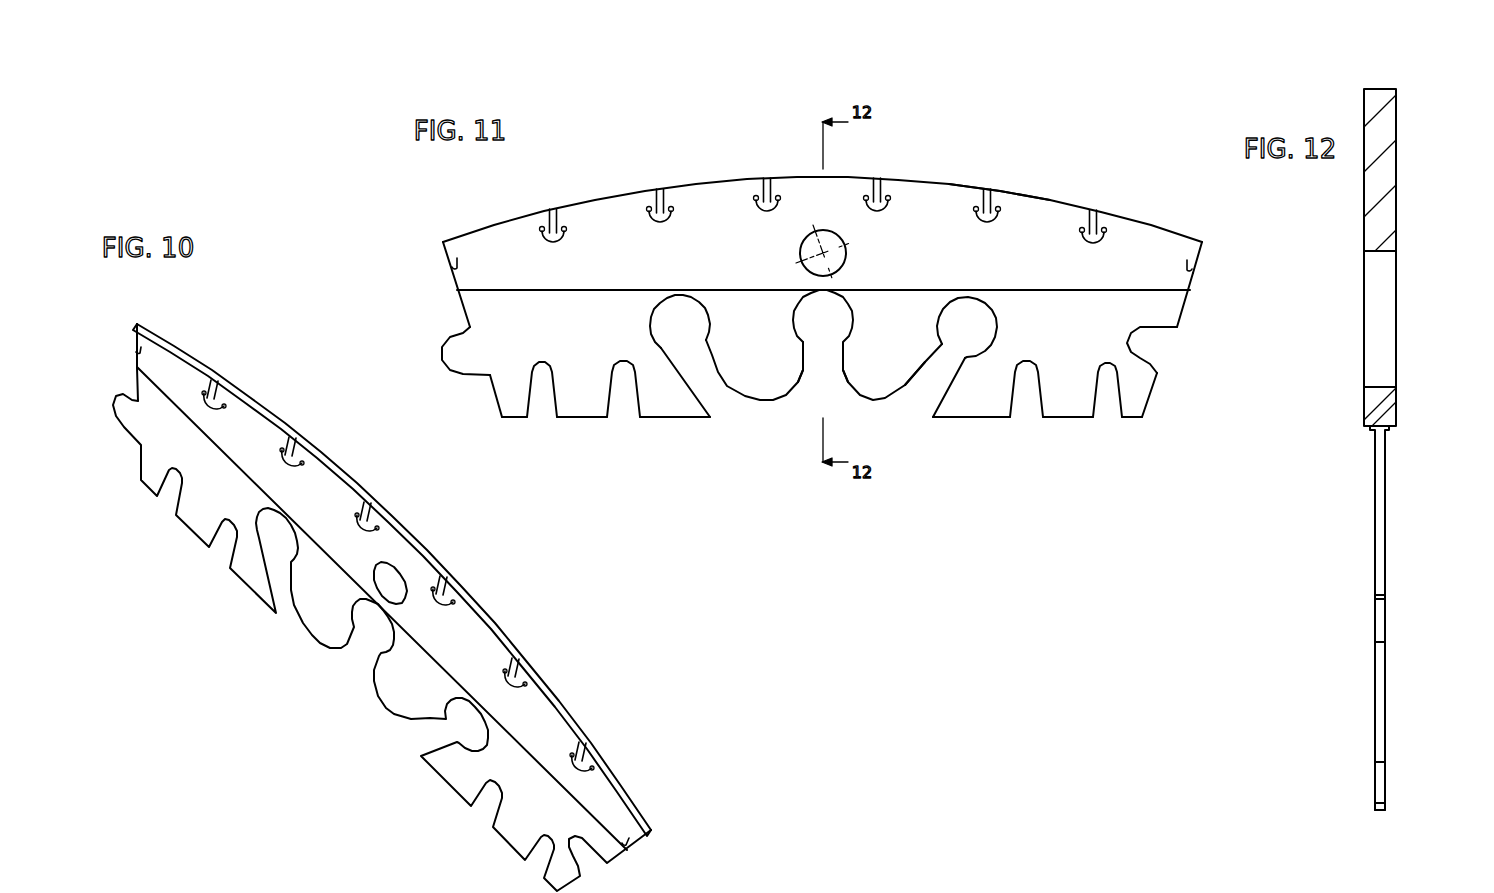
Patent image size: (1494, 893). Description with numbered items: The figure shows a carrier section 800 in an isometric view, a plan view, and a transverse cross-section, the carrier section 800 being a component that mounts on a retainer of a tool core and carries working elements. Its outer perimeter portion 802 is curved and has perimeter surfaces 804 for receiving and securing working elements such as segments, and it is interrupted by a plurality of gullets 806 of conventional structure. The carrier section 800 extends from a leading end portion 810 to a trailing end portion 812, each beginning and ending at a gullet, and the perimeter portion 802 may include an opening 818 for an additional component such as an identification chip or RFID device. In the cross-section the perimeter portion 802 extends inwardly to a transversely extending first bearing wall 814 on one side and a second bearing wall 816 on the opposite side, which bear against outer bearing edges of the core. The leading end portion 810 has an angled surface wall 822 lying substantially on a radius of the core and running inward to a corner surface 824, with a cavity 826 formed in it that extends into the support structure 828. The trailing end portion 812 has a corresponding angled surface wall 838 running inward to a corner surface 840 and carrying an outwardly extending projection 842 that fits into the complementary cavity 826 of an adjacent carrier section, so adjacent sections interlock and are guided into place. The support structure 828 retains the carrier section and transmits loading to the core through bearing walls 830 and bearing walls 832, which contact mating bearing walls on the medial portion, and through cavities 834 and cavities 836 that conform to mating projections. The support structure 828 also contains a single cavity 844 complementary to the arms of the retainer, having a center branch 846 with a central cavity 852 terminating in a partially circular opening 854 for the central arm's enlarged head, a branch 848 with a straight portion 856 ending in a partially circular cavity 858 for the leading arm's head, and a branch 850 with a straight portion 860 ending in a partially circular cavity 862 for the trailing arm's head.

In FIG. 11, the carrier section 800 is at (655, 148).
In FIG. 10, the carrier section 800 is at (204, 345).
In FIG. 12, the carrier section 800 is at (1348, 112).
In FIG. 11, the perimeter portion 802 is at (928, 197).
In FIG. 11, the perimeter surfaces 804 is at (1010, 192).
In FIG. 12, the perimeter surfaces 804 is at (1379, 88).
In FIG. 11, the gullets 806 is at (1095, 213).
In FIG. 11, the leading end portion 810 is at (1228, 251).
In FIG. 11, the trailing end portion 812 is at (436, 265).
In FIG. 12, the first bearing wall 814 is at (1370, 430).
In FIG. 12, the second bearing wall 816 is at (1388, 430).
In FIG. 11, the opening 818 is at (824, 231).
In FIG. 10, the opening 818 is at (405, 586).
In FIG. 12, the opening 818 is at (1377, 279).
In FIG. 11, the angled surface wall 822 is at (1186, 306).
In FIG. 11, the corner surface 824 is at (1144, 418).
In FIG. 11, the cavity 826 is at (1158, 343).
In FIG. 10, the support structure 828 is at (517, 832).
In FIG. 12, the support structure 828 is at (1350, 525).
In FIG. 11, the bearing walls 830 is at (1143, 420).
In FIG. 11, the bearing walls 832 is at (677, 418).
In FIG. 11, the cavities 834 is at (1108, 416).
In FIG. 11, the cavities 836 is at (623, 416).
In FIG. 11, the angled surface wall 838 is at (456, 293).
In FIG. 11, the corner surface 840 is at (503, 415).
In FIG. 11, the projection 842 is at (437, 358).
In FIG. 11, the cavity 844 is at (811, 418).
In FIG. 11, the center branch 846 is at (831, 386).
In FIG. 11, the branch 848 is at (944, 372).
In FIG. 11, the branch 850 is at (710, 371).
In FIG. 11, the central cavity 852 is at (832, 360).
In FIG. 11, the partially circular opening 854 is at (838, 318).
In FIG. 11, the straight portion 856 is at (935, 392).
In FIG. 11, the partially circular cavity 858 is at (978, 330).
In FIG. 11, the straight portion 860 is at (719, 392).
In FIG. 11, the partially circular cavity 862 is at (668, 330).